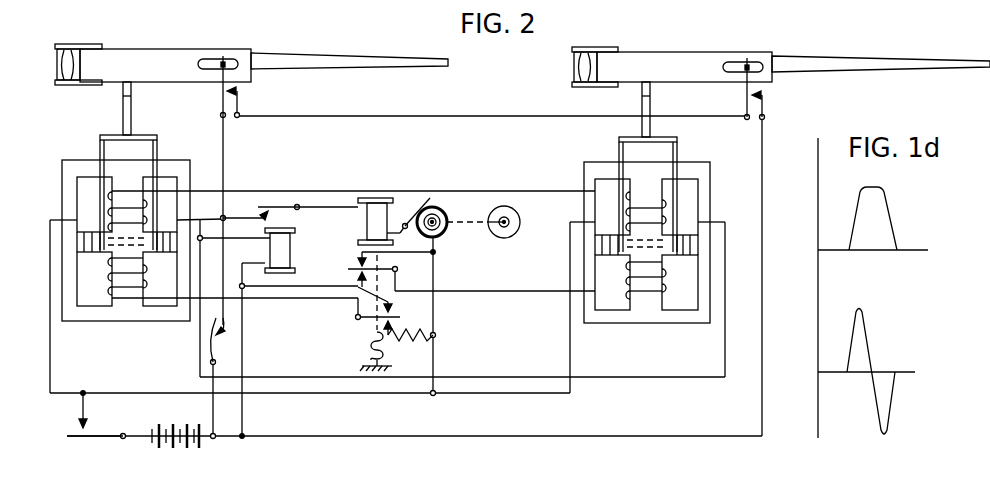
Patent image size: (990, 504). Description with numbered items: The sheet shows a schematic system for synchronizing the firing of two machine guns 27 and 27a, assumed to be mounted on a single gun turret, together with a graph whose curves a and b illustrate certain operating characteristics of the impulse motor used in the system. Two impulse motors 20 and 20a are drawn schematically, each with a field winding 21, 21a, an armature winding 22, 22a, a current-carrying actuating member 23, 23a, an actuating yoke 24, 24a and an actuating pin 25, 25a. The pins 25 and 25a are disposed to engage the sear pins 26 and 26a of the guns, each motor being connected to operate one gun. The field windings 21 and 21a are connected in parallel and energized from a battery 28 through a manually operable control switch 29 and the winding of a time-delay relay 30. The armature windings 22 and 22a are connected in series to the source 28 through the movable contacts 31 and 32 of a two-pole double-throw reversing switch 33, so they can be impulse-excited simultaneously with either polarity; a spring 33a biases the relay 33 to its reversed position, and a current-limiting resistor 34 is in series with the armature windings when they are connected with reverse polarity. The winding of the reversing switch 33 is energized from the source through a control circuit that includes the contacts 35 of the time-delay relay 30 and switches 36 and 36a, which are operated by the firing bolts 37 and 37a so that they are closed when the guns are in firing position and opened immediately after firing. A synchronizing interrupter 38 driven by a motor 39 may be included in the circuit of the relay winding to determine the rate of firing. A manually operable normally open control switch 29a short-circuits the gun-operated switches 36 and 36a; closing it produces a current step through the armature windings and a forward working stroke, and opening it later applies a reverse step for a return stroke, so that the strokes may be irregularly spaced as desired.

In FIG. 2, the impulse motor 20 is at (62, 163).
In FIG. 2, the field winding 21 is at (88, 260).
In FIG. 2, the armature winding 22 is at (110, 277).
In FIG. 2, the current-carrying actuating member 23 is at (100, 223).
In FIG. 2, the actuating yoke 24 is at (100, 136).
In FIG. 2, the actuating pin 25 is at (131, 113).
In FIG. 2, the sear pin 26 is at (124, 88).
In FIG. 2, the machine gun 27 is at (140, 53).
In FIG. 2, the battery 28 is at (172, 425).
In FIG. 2, the manually operable control switch 29 is at (78, 433).
In FIG. 2, the manually operable normally open control switch 29a is at (222, 336).
In FIG. 2, the time-delay relay 30 is at (280, 248).
In FIG. 2, the movable contact 31 is at (348, 269).
In FIG. 2, the movable contact 32 is at (395, 318).
In FIG. 2, the two-pole double-throw reversing switch 33 is at (380, 200).
In FIG. 2, the spring 33a is at (370, 341).
In FIG. 2, the current-limiting resistor 34 is at (412, 351).
In FIG. 2, the contacts of the time-delay relay 35 is at (262, 210).
In FIG. 2, the switch 36 is at (233, 92).
In FIG. 2, the firing bolt 37 is at (223, 63).
In FIG. 2, the synchronizing interrupter 38 is at (445, 232).
In FIG. 2, the motor 39 is at (510, 237).
In FIG. 2, the impulse motor 20a is at (700, 170).
In FIG. 2, the field winding 21a is at (683, 260).
In FIG. 2, the armature winding 22a is at (664, 290).
In FIG. 2, the current-carrying actuating member 23a is at (675, 233).
In FIG. 2, the actuating yoke 24a is at (619, 138).
In FIG. 2, the actuating pin 25a is at (650, 108).
In FIG. 2, the sear pin 26a is at (643, 90).
In FIG. 2, the machine gun 27a is at (667, 44).
In FIG. 2, the switch 36a is at (763, 97).
In FIG. 2, the firing bolt 37a is at (747, 63).
In FIG. 1d, the trapezoidal waveform a is at (893, 205).
In FIG. 1d, the triangular waveform b is at (870, 350).